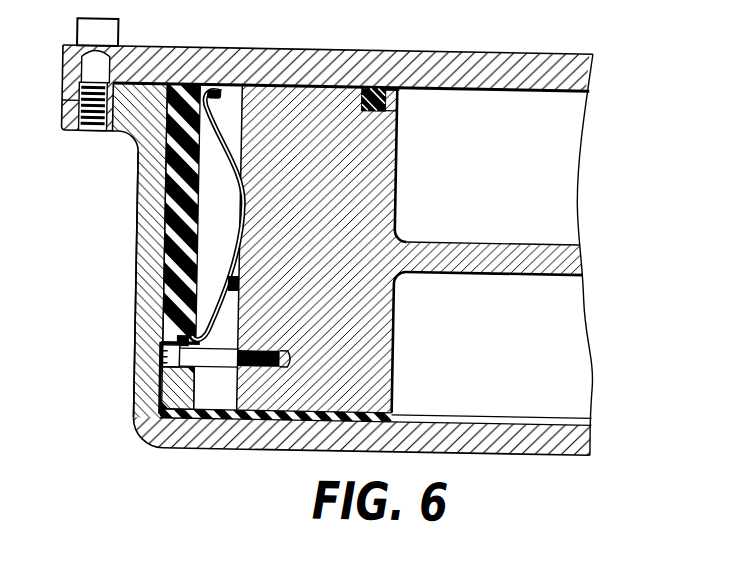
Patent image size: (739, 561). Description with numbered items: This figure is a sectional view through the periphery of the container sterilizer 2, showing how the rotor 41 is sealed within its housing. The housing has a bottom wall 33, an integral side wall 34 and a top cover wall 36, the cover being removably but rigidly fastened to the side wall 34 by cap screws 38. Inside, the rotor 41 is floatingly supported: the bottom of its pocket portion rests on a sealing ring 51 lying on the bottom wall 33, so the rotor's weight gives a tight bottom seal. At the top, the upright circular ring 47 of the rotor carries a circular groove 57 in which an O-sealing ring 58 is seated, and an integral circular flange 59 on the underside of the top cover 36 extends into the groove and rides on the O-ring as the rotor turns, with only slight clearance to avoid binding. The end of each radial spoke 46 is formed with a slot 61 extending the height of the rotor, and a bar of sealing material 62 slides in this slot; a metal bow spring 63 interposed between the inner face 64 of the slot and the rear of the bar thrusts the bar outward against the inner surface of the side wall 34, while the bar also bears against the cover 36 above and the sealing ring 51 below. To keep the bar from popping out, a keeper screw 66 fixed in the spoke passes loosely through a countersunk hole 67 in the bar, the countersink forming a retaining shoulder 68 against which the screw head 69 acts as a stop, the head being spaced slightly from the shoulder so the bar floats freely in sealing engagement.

The container sterilizer 2 is at (133, 314).
The bottom wall 33 is at (224, 437).
The side wall 34 is at (141, 360).
The top cover wall 36 is at (549, 34).
The cap screw 38 is at (77, 27).
The rotor 41 is at (400, 208).
The spoke 46 is at (397, 309).
The circular ring 47 is at (399, 144).
The sealing ring 51 is at (400, 410).
The circular groove 57 is at (390, 94).
The O-sealing ring 58 is at (399, 112).
The circular flange 59 is at (378, 84).
The slot 61 is at (228, 88).
The sealing bar 62 is at (172, 162).
The bow spring 63 is at (238, 282).
The inner face of the slot 64 is at (242, 134).
The keeper screw 66 is at (167, 345).
The hole 67 is at (170, 395).
The retaining shoulder 68 is at (194, 355).
The head 69 is at (168, 366).